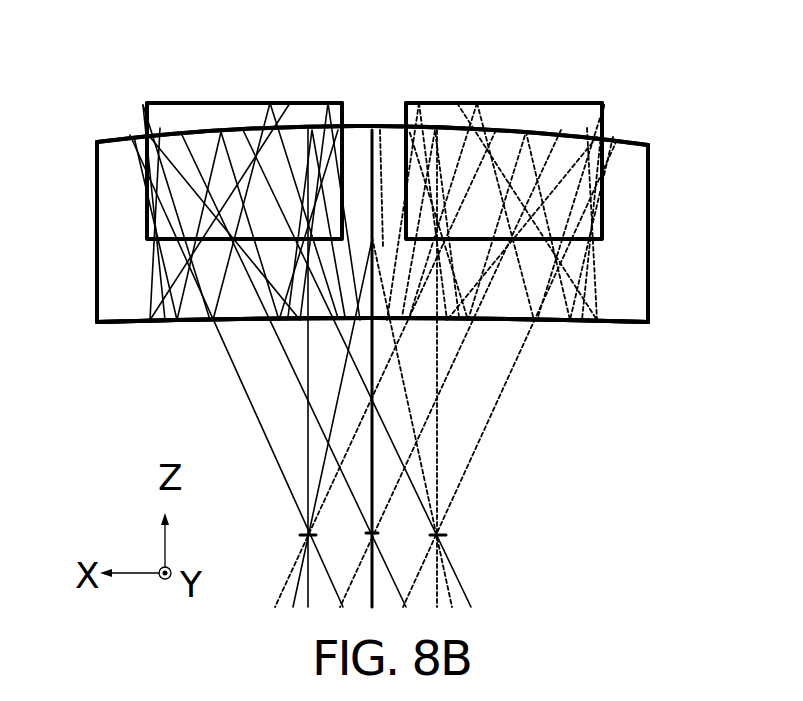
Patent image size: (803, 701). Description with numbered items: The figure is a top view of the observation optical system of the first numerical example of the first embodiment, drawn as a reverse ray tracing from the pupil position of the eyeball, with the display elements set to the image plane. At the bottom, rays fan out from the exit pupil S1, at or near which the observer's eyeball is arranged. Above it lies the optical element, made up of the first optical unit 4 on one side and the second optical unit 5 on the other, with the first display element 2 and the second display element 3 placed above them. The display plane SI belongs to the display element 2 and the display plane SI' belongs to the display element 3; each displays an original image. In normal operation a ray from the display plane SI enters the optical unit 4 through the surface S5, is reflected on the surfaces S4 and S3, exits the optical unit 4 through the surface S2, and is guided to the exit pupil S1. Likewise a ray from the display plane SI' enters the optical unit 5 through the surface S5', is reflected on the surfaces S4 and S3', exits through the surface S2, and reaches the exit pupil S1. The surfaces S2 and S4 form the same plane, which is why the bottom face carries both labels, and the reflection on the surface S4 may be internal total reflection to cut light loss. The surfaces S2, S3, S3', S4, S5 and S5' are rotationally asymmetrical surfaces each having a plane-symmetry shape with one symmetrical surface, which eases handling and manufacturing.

The first display element 2 is at (180, 118).
The second display element 3 is at (600, 104).
The first optical unit 4 is at (120, 310).
The second optical unit 5 is at (635, 268).
The exit pupil S1 is at (440, 536).
The exit surface S2 is at (612, 322).
The reflecting surface S4 is at (402, 387).
The reflecting surface of first optical unit S3 is at (197, 113).
The reflecting surface of second optical unit S3' is at (549, 122).
The entrance surface of first optical unit S5 is at (66, 232).
The entrance surface of second optical unit S5' is at (681, 233).
The display plane of first display element SI is at (244, 75).
The display plane of second display element SI' is at (504, 78).